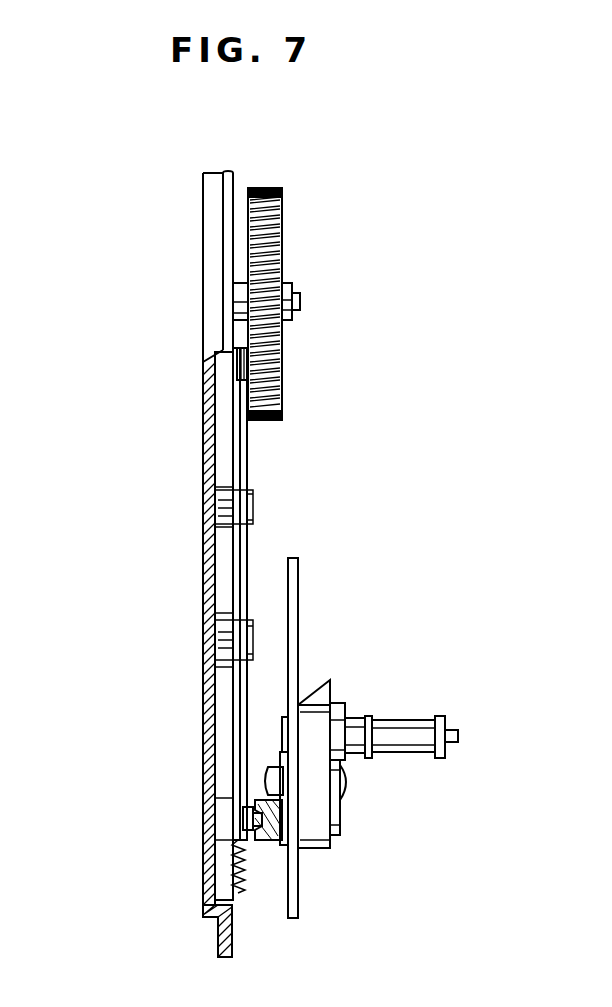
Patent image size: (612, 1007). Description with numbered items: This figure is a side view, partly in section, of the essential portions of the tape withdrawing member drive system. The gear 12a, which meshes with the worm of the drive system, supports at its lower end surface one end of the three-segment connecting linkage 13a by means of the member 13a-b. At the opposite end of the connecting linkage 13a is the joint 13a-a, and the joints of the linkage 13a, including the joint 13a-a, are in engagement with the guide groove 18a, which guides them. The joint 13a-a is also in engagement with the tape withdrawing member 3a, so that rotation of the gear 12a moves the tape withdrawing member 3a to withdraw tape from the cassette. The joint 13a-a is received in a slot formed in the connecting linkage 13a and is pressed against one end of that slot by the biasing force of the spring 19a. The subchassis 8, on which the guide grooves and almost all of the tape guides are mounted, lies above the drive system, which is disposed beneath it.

The gear 12a is at (284, 225).
The three-segment linkage 13a is at (247, 490).
The joint 13a-a is at (235, 815).
The member 13a-b is at (240, 370).
The guide groove 18a is at (222, 433).
The subchassis 8 is at (298, 612).
The tape withdrawing member 3a is at (357, 718).
The spring 19a is at (245, 885).